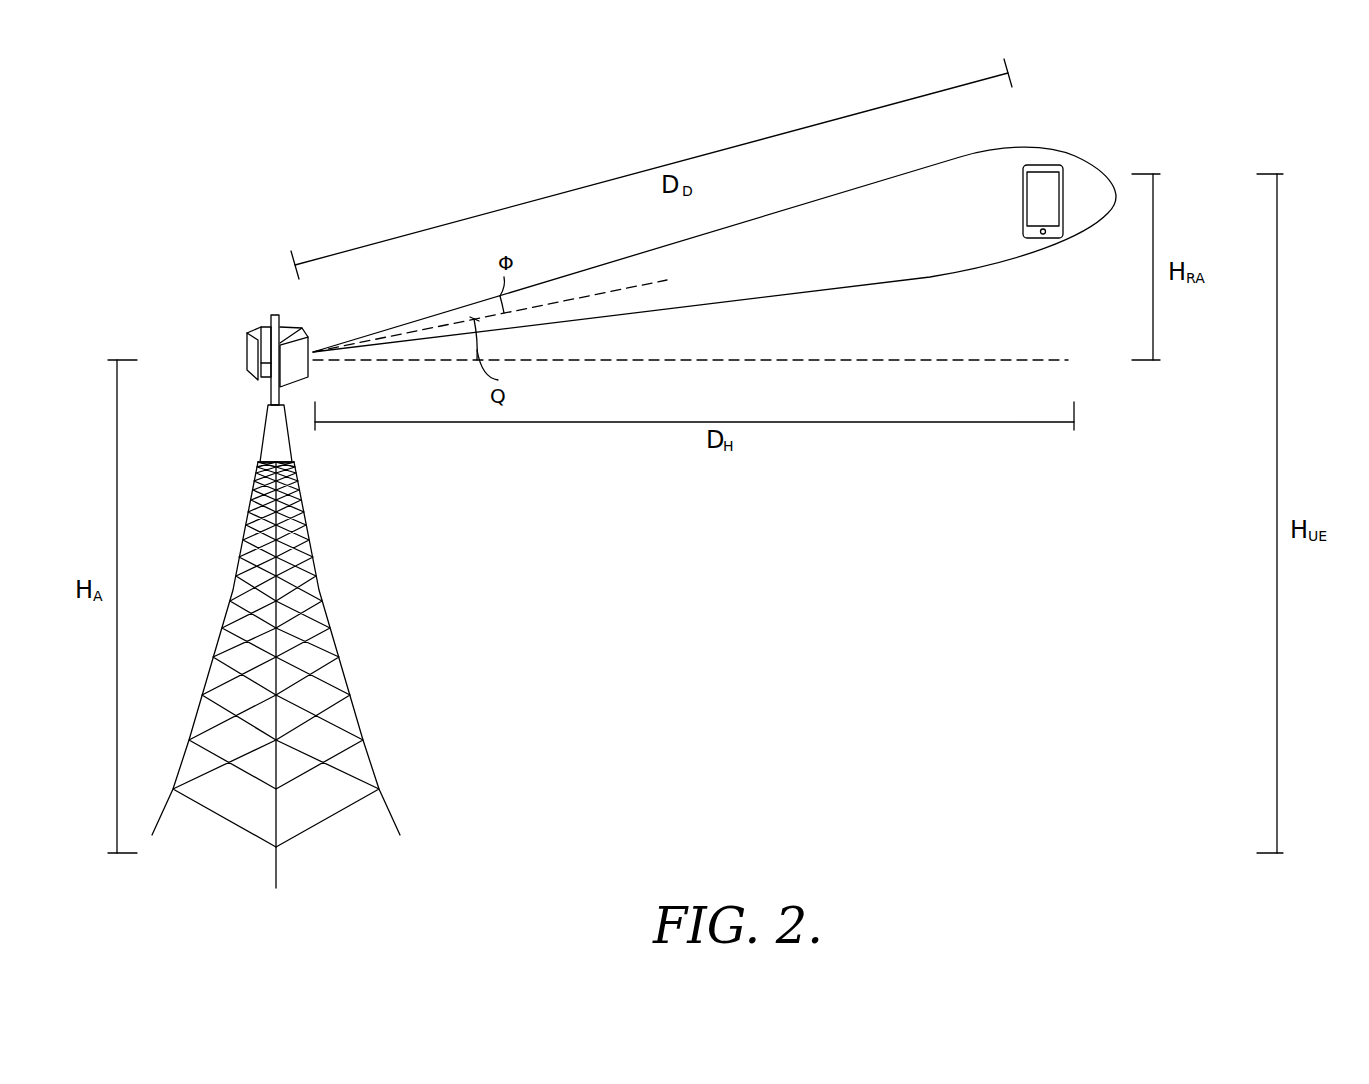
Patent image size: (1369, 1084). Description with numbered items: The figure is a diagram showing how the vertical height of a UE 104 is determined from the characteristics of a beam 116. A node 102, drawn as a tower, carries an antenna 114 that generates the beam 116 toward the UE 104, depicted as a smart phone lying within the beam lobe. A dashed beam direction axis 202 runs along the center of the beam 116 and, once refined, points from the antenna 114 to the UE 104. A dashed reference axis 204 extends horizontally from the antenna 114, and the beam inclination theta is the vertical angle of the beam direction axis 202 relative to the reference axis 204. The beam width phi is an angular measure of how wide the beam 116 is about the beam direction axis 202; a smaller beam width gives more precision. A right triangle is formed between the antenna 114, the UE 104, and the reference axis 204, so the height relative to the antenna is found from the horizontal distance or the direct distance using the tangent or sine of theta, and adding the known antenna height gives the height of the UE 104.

The node 102 is at (242, 546).
The antenna 114 is at (247, 368).
The beam 116 is at (1050, 148).
The UE 104 is at (1023, 203).
The beam direction axis 202 is at (580, 298).
The reference axis 204 is at (842, 360).